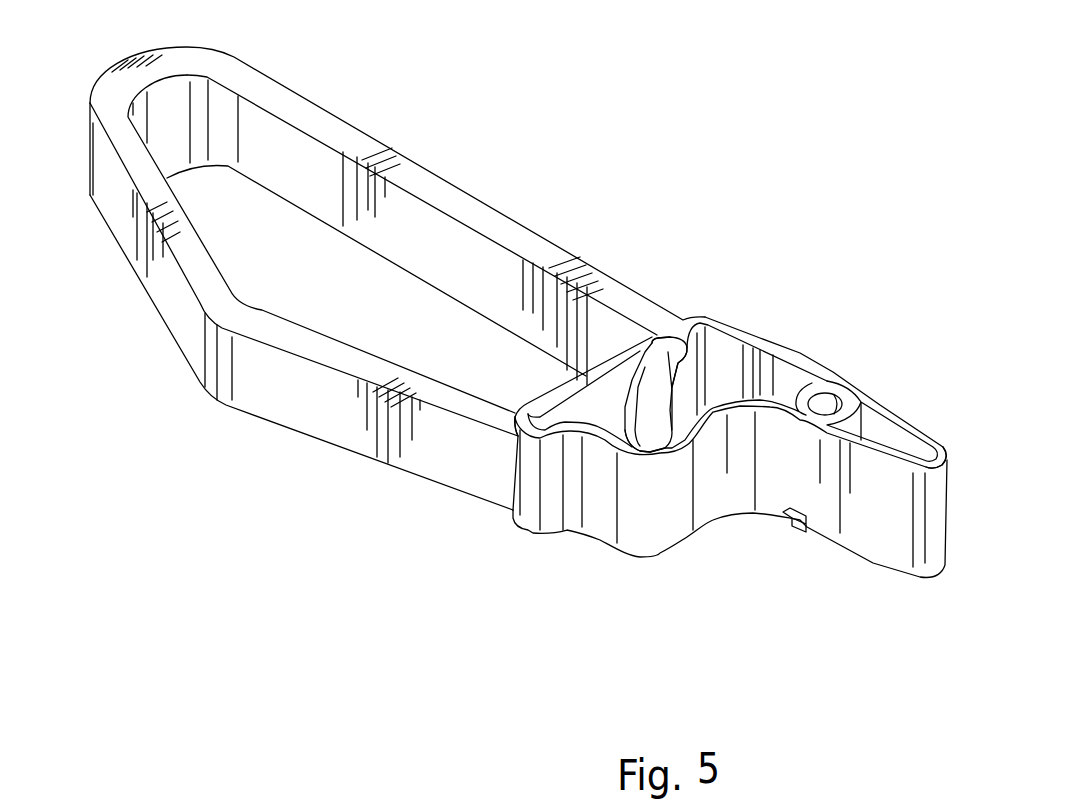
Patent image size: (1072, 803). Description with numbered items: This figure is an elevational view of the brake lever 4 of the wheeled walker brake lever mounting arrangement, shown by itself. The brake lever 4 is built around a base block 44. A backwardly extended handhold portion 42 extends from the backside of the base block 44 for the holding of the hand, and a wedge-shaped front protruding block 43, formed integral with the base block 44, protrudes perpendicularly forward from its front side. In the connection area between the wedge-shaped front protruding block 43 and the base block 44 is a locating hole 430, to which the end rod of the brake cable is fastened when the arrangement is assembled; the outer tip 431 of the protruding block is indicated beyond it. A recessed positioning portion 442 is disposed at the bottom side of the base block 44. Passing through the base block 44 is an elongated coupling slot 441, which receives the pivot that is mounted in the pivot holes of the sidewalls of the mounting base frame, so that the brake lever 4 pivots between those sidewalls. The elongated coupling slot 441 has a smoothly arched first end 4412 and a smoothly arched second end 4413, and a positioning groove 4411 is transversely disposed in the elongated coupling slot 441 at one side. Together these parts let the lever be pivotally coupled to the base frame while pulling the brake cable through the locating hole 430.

The brake lever 4 is at (563, 359).
The handhold portion 42 is at (420, 175).
The wedge-shaped front protruding block 43 is at (890, 407).
The locating hole 430 is at (806, 532).
The arm tip 431 is at (947, 457).
The base block 44 is at (738, 327).
The elongated coupling slot 441 is at (680, 393).
The positioning groove 4411 is at (690, 367).
The first end 4412 is at (652, 340).
The second end 4413 is at (667, 338).
The recessed positioning portion 442 is at (583, 435).